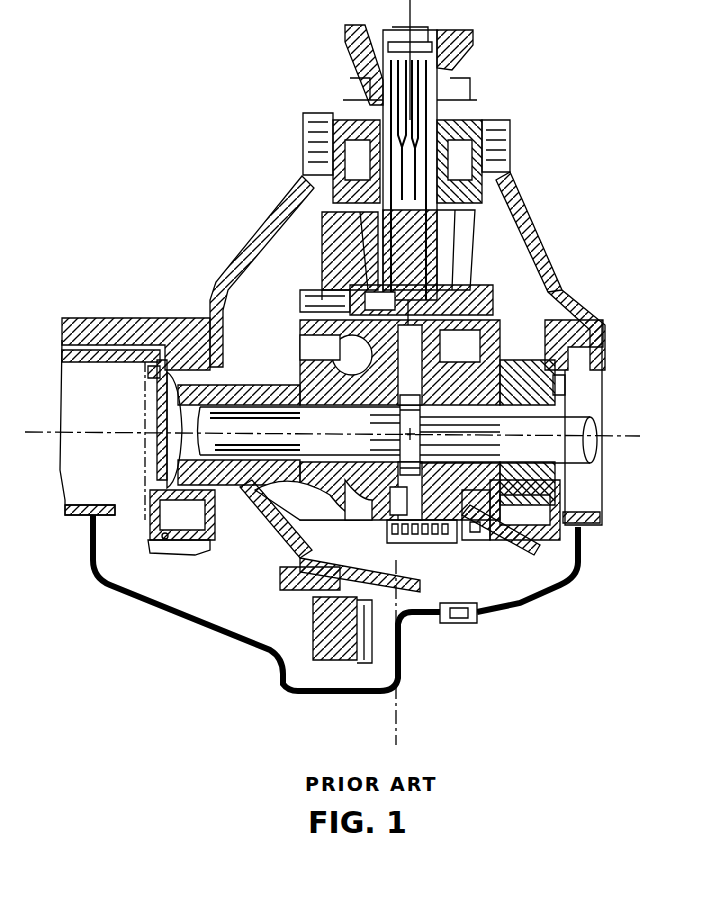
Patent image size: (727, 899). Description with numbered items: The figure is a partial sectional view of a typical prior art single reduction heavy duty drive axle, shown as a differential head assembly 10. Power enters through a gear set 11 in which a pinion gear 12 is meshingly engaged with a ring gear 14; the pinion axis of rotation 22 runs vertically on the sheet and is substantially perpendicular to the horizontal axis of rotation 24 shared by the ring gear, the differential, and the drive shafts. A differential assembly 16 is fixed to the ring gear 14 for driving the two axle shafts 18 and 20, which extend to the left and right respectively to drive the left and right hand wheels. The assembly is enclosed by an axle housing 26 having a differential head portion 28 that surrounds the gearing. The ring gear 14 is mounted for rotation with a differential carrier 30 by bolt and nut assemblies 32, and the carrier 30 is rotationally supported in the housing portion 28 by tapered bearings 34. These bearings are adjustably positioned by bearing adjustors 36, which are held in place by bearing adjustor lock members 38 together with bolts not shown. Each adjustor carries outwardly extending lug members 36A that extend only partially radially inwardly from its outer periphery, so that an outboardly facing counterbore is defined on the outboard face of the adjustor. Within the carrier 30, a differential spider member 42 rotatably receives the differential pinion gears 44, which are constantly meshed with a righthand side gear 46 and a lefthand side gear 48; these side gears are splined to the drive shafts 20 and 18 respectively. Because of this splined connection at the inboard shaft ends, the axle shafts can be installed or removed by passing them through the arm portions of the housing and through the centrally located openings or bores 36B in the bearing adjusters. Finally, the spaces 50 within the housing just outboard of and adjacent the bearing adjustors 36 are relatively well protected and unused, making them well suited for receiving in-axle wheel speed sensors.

The differential head assembly 10 is at (219, 246).
The gear set 11 is at (312, 254).
The pinion gear 12 is at (440, 237).
The ring gear 14 is at (320, 238).
The differential assembly 16 is at (318, 496).
The axle shaft 18 is at (265, 519).
The axle shaft 20 is at (560, 479).
The axis of rotation 22 is at (405, 710).
The axis of rotation 24 is at (72, 413).
The axle housing 26 is at (95, 568).
The differential head portion 28 is at (549, 256).
The differential carrier 30 is at (268, 545).
The bolt and nut assemblies 32 is at (279, 603).
The tapered bearings 34 is at (227, 368).
The bearing adjustors 36 is at (143, 505).
The lug members 36A is at (148, 372).
The openings or bores 36B is at (152, 410).
The bearing adjustor lock members 38 is at (180, 548).
The differential spider member 42 is at (396, 545).
The differential pinion gears 44 is at (418, 547).
The righthand side gear 46 is at (475, 512).
The lefthand side gear 48 is at (350, 500).
The spaces 50 is at (340, 440).